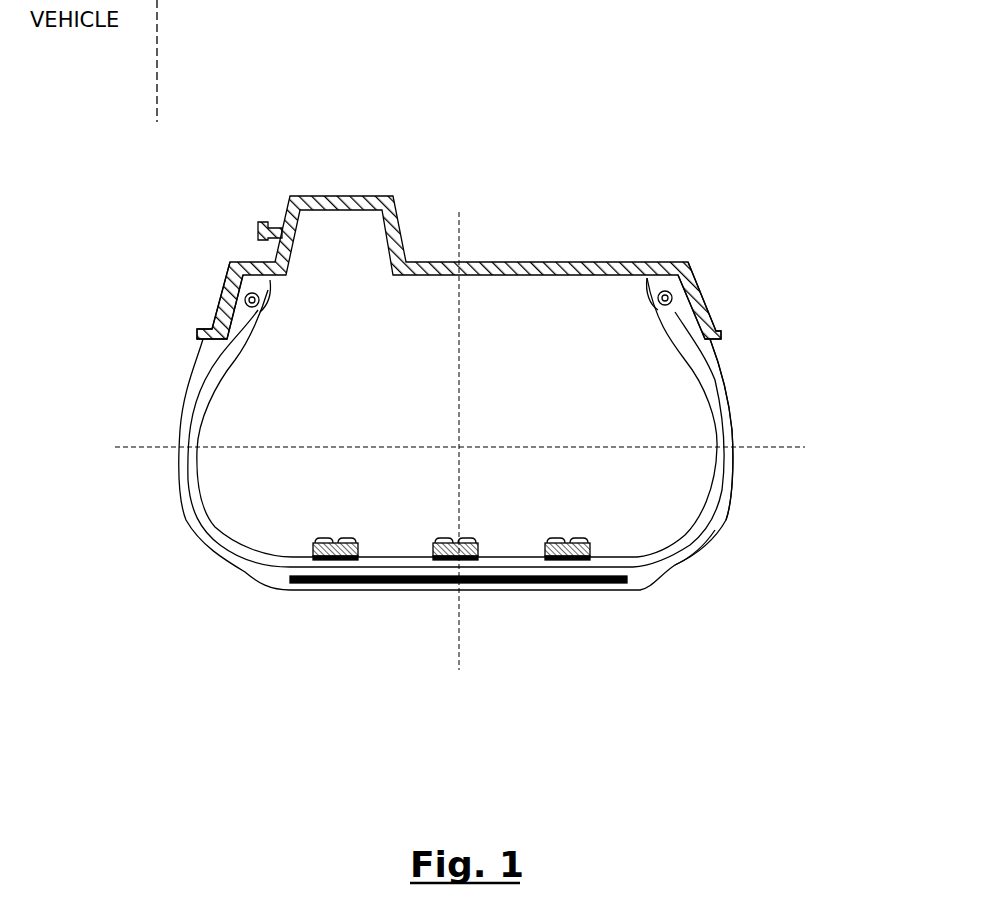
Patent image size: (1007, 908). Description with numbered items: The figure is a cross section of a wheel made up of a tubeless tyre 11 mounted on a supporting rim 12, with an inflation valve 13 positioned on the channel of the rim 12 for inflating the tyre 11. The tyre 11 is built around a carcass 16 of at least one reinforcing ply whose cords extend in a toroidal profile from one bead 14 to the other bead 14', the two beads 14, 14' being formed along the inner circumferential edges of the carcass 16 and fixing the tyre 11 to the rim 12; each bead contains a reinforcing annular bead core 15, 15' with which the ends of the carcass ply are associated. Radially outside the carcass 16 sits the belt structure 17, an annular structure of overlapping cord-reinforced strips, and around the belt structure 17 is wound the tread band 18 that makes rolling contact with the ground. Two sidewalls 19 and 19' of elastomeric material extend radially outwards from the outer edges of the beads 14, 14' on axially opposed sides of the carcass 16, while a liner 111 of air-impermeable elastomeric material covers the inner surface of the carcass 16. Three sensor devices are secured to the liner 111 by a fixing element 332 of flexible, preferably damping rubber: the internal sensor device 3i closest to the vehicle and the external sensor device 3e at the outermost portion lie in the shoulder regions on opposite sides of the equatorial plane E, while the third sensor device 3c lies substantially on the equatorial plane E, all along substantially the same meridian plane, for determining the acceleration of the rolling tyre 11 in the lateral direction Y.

The tyre 11 is at (700, 543).
The supporting rim 12 is at (421, 261).
The inflation valve 13 is at (270, 222).
The bead 14 is at (185, 297).
The bead 14' is at (765, 300).
The reinforcing annular core 15 is at (303, 320).
The reinforcing annular core 15' is at (610, 319).
The carcass 16 is at (203, 533).
The belt structure 17 is at (258, 582).
The tread band 18 is at (500, 590).
The sidewall 19 is at (170, 464).
The sidewall 19' is at (765, 452).
The liner 111 is at (407, 557).
The fixing element 332 is at (313, 584).
The internal sensor device 3i is at (331, 540).
The third sensor device 3c is at (463, 538).
The external sensor device 3e is at (568, 540).
The equatorial plane E is at (460, 300).
The lateral direction Y is at (510, 448).